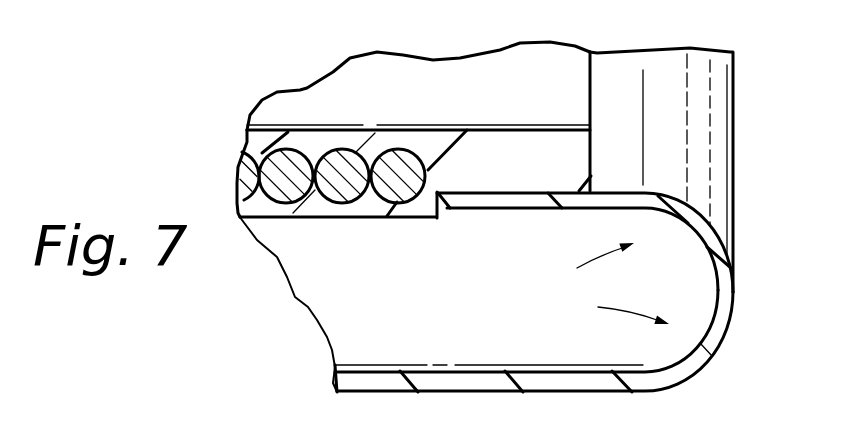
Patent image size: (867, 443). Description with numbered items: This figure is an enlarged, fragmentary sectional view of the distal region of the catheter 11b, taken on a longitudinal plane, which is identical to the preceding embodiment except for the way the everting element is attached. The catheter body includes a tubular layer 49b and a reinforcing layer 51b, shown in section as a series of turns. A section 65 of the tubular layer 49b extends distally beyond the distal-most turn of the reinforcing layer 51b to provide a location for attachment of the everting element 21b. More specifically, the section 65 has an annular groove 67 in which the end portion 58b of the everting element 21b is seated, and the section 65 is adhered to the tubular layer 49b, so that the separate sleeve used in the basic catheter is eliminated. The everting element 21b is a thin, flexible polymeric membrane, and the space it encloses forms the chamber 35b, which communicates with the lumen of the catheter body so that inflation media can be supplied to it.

The catheter 11b is at (236, 123).
The tubular layer 49b is at (310, 140).
The reinforcing layer 51b is at (247, 180).
The chamber 35b is at (353, 288).
The everting element 21b is at (335, 382).
The end portion of the everting element 58b is at (491, 203).
The section of the tubular layer 65 is at (498, 153).
The annular groove 67 is at (522, 195).